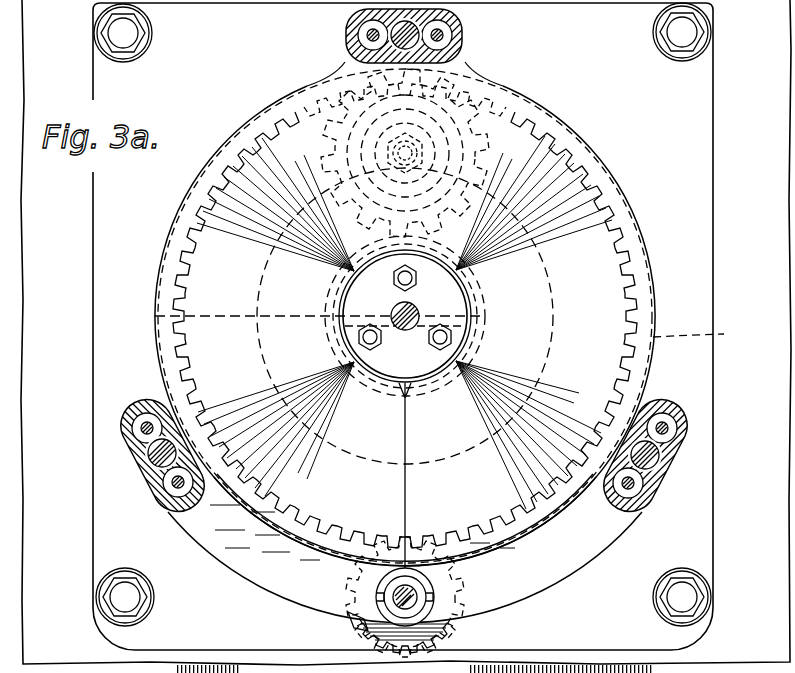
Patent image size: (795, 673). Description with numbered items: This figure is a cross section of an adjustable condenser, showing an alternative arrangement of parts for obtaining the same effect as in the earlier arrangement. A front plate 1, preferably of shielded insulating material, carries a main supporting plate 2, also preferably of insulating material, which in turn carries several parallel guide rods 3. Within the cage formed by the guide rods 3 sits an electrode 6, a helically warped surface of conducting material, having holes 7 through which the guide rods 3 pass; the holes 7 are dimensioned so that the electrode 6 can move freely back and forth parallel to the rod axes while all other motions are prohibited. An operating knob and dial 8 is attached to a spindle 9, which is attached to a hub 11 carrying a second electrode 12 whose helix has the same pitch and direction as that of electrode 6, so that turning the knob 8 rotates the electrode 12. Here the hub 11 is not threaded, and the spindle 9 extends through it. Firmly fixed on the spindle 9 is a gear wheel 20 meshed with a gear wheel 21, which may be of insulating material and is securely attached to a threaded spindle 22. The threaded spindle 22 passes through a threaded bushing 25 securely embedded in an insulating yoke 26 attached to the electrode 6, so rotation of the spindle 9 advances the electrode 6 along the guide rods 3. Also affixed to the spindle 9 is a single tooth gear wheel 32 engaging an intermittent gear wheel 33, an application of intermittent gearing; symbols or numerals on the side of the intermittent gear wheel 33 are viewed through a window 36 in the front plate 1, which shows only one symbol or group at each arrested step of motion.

The front plate 1 is at (62, 254).
The main supporting plate 2 is at (697, 150).
The guide rods 3 is at (150, 454).
The electrode 6 is at (152, 330).
The holes 7 is at (150, 476).
The operating knob and dial 8 is at (487, 300).
The spindle 9 is at (412, 312).
The hub 11 is at (343, 332).
The electrode 12 is at (706, 339).
The gear wheel 20 is at (307, 537).
The gear wheel 21 is at (356, 625).
The threaded spindle 22 is at (443, 617).
The threaded bushing 25 is at (443, 583).
The insulating yoke 26 is at (547, 563).
The single tooth gear wheel 32 is at (383, 397).
The intermittent gear wheel 33 is at (488, 142).
The window 36 is at (488, 68).